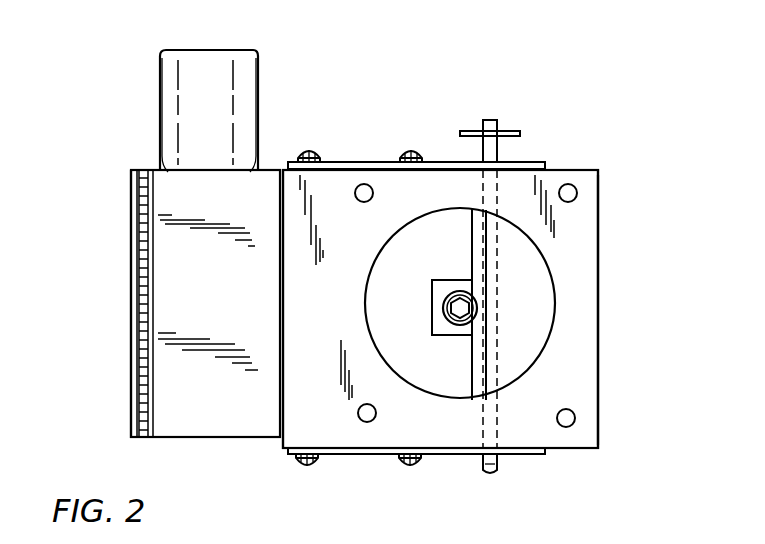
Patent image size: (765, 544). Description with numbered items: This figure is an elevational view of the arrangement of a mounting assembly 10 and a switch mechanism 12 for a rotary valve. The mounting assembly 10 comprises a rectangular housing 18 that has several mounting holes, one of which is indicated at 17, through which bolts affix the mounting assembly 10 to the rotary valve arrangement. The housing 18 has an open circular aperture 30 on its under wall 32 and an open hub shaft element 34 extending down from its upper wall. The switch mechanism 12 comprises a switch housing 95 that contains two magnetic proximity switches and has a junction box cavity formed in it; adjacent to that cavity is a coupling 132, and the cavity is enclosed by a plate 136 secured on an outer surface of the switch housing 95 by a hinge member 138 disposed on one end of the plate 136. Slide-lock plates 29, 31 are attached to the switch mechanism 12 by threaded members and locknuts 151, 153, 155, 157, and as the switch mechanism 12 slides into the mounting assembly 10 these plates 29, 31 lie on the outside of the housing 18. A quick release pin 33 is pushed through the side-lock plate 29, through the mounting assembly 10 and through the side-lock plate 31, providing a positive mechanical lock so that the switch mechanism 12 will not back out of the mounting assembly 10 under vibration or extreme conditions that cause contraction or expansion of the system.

The mounting assembly 10 is at (616, 262).
The switch mechanism 12 is at (100, 264).
The mounting hole 17 is at (578, 194).
The housing 18 is at (584, 376).
The slide-lock plate 29 is at (343, 163).
The open circular aperture 30 is at (534, 302).
The slide-lock plate 31 is at (358, 455).
The under wall 32 is at (332, 320).
The quick release pin 33 is at (494, 120).
The open hub shaft element 34 is at (465, 305).
The switch housing 95 is at (200, 424).
The coupling 132 is at (177, 103).
The plate 136 is at (138, 363).
The hinge member 138 is at (138, 219).
The locknut 151 is at (411, 152).
The locknut 153 is at (309, 152).
The locknut 155 is at (412, 468).
The locknut 157 is at (307, 468).